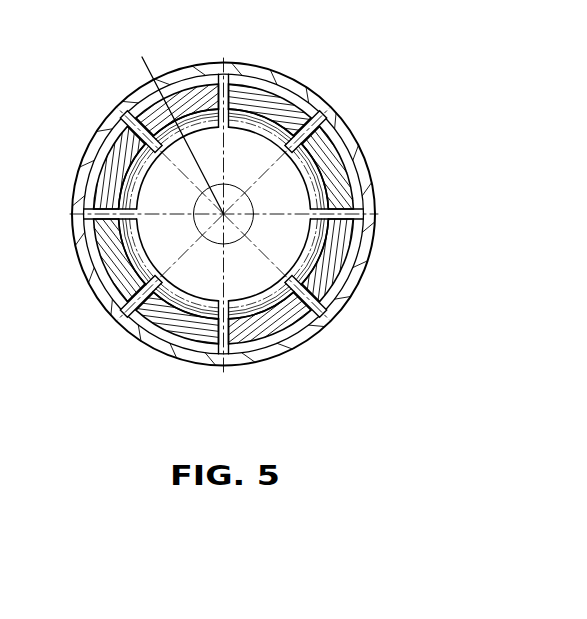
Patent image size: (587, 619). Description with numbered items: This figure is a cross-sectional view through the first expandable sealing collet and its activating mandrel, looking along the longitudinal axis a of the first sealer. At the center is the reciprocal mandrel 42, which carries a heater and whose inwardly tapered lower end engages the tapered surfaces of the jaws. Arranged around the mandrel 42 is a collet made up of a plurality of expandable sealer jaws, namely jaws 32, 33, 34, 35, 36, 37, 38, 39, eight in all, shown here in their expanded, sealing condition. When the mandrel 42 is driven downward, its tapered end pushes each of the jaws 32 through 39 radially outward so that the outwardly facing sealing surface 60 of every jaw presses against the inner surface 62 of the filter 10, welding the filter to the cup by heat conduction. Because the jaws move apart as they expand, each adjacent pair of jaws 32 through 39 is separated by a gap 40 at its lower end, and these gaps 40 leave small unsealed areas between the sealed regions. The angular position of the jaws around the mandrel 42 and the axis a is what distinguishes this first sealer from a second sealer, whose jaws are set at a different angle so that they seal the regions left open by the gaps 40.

The filter 10 is at (349, 126).
The expandable sealer jaw 32 is at (112, 133).
The expandable sealer jaw 33 is at (350, 184).
The sealer jaw 34 is at (343, 257).
The sealer jaw 35 is at (306, 337).
The sealer jaw 36 is at (183, 343).
The sealer jaw 37 is at (102, 236).
The sealer jaw 38 is at (143, 115).
The sealer jaw 39 is at (238, 87).
The gap 40 is at (221, 85).
The reciprocal mandrel 42 is at (297, 78).
The sealing surface 60 is at (186, 72).
The inner surface of filter 62 is at (297, 110).
The longitudinal axis a is at (178, 122).